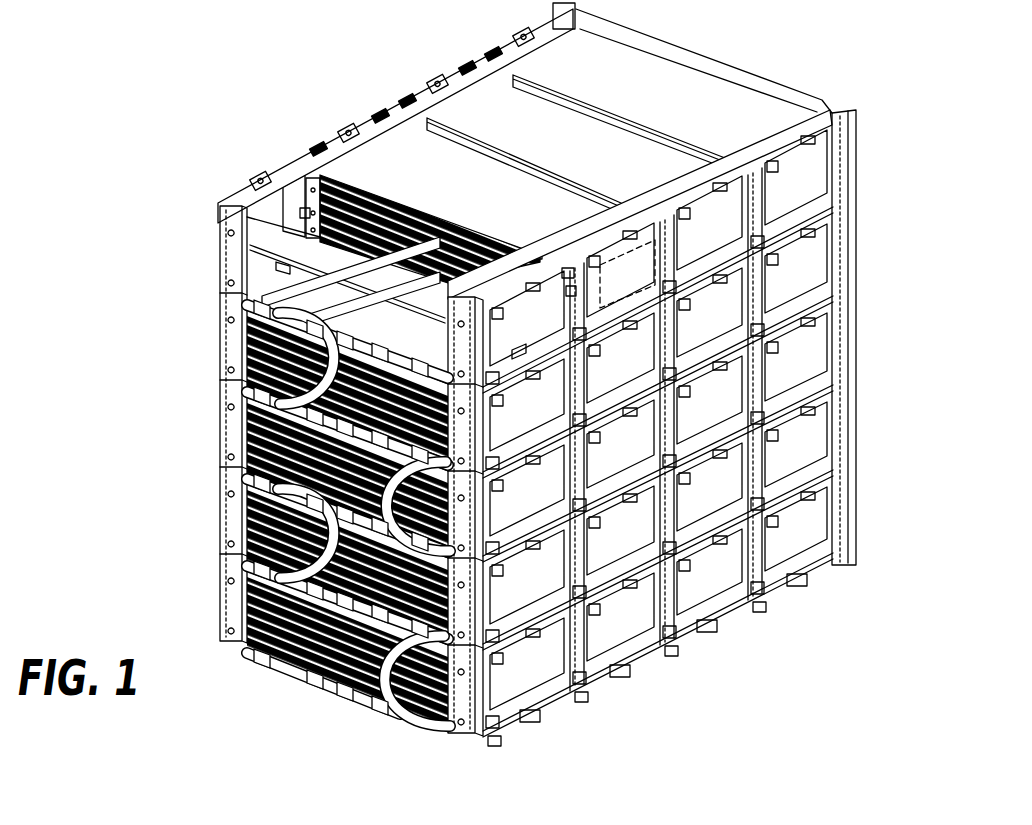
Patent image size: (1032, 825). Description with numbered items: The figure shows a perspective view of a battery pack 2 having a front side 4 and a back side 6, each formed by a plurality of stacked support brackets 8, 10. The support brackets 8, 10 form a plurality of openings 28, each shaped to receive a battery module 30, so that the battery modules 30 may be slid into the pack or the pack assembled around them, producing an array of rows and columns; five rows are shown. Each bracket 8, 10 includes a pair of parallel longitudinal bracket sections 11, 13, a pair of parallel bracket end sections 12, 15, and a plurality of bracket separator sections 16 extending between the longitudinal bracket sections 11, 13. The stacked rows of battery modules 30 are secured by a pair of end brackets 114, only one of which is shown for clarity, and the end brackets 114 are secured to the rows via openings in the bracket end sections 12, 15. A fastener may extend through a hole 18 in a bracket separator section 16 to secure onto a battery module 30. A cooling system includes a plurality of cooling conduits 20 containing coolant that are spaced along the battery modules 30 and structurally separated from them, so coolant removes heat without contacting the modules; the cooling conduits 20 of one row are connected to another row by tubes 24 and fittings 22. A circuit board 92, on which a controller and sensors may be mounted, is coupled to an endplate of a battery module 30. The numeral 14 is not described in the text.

The battery pack 2 is at (806, 46).
The front side 4 is at (378, 94).
The back side 6 is at (872, 352).
The support bracket 8 is at (727, 163).
The support bracket 10 is at (471, 90).
The longitudinal bracket section 11 is at (325, 157).
The bracket end section 12 is at (228, 262).
The longitudinal bracket section 13 is at (282, 268).
The shelf rail 14 is at (250, 303).
The bracket end section 15 is at (832, 120).
The bracket separator section 16 is at (303, 215).
The hole 18 is at (568, 273).
The cooling conduit 20 is at (427, 200).
The fitting 22 is at (247, 327).
The tube 24 is at (252, 370).
The opening 28 is at (286, 210).
The battery module 30 is at (370, 172).
The circuit board 92 is at (635, 232).
The end bracket 114 is at (850, 150).